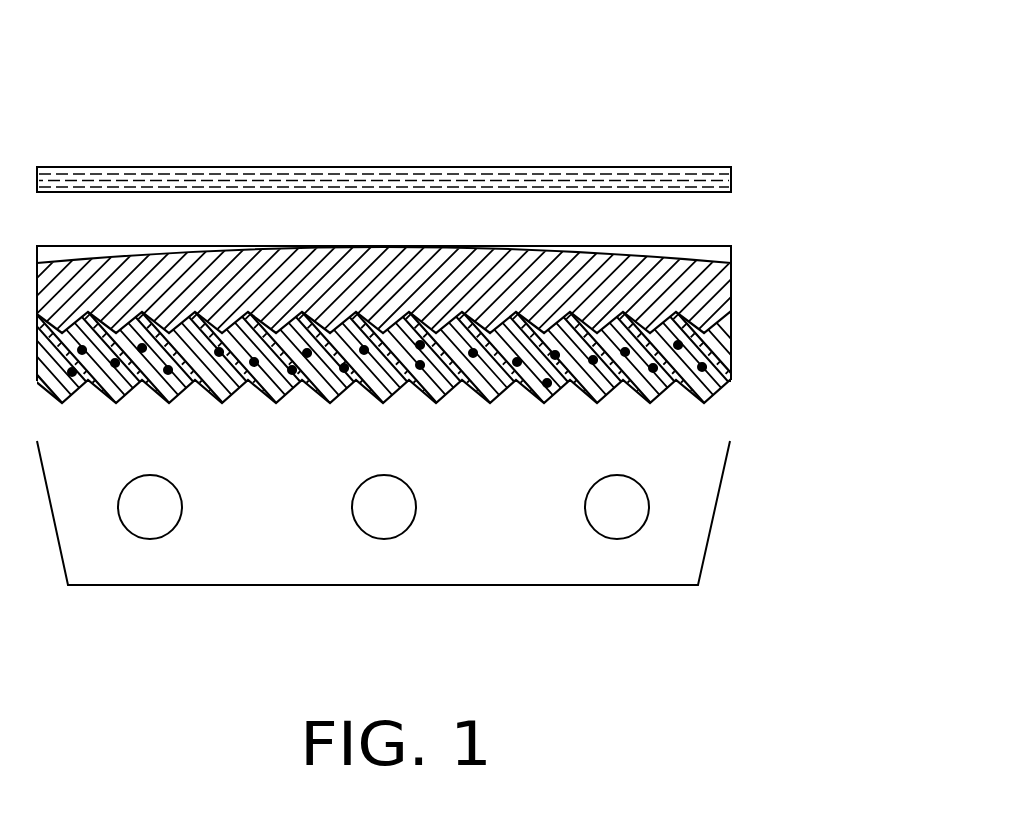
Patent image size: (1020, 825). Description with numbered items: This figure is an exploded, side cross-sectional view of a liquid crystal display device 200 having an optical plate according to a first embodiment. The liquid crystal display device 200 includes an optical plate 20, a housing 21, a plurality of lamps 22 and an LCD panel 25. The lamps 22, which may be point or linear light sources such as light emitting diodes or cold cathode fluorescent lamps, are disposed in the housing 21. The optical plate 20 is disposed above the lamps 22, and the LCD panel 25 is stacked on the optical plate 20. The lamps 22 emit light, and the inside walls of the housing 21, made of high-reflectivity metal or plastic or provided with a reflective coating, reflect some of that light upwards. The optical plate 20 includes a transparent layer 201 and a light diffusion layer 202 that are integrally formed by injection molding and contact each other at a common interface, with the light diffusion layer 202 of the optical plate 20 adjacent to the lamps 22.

The liquid crystal display device 200 is at (640, 73).
The LCD panel 25 is at (731, 178).
The optical plate 20 is at (747, 243).
The transparent layer 201 is at (720, 298).
The light diffusion layer 202 is at (720, 352).
The housing 21 is at (433, 538).
The lamps 22 is at (623, 525).